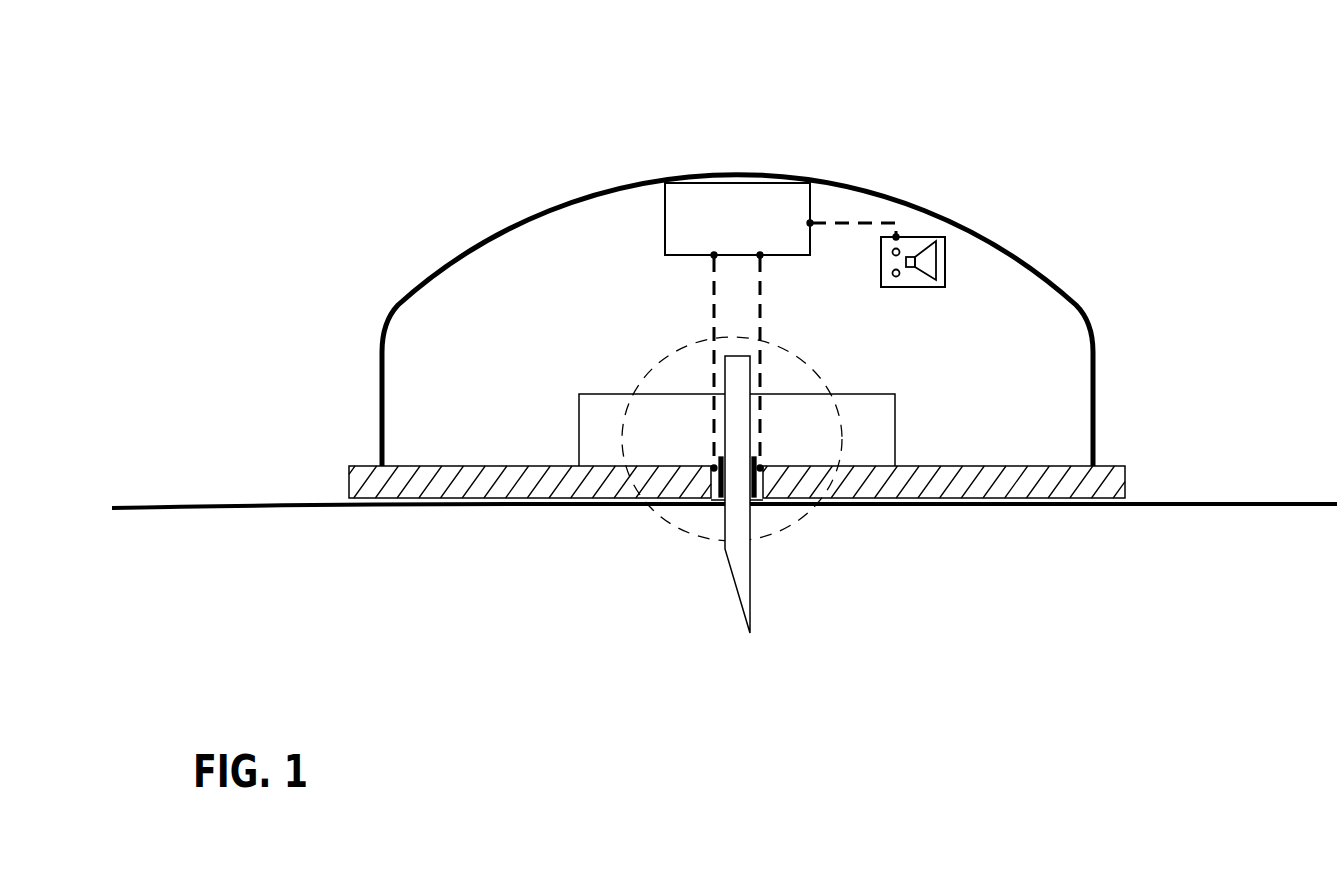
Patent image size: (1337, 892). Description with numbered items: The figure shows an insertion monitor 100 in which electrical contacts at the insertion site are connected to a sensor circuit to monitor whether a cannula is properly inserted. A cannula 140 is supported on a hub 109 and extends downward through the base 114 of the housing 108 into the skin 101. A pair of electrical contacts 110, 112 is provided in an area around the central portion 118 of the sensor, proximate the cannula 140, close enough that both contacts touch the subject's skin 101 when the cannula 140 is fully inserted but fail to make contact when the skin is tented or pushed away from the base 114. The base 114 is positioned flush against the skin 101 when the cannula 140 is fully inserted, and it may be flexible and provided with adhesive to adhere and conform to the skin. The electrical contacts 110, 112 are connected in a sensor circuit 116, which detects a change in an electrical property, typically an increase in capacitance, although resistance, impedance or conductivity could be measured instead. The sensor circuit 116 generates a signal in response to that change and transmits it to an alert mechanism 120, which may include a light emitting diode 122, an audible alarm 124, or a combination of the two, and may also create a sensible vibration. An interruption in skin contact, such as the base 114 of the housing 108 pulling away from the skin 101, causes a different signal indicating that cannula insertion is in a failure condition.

The insertion monitor 100 is at (1028, 198).
The skin 101 is at (287, 505).
The housing 108 is at (465, 240).
The hub 109 is at (867, 437).
The electrical contact 110 is at (720, 470).
The electrical contact 112 is at (757, 470).
The base 114 is at (473, 480).
The sensor circuit 116 is at (762, 200).
The central portion 118 is at (802, 340).
The alert mechanism 120 is at (959, 321).
The light emitting diode 122 is at (897, 280).
The audible alarm 124 is at (933, 263).
The cannula 140 is at (738, 598).